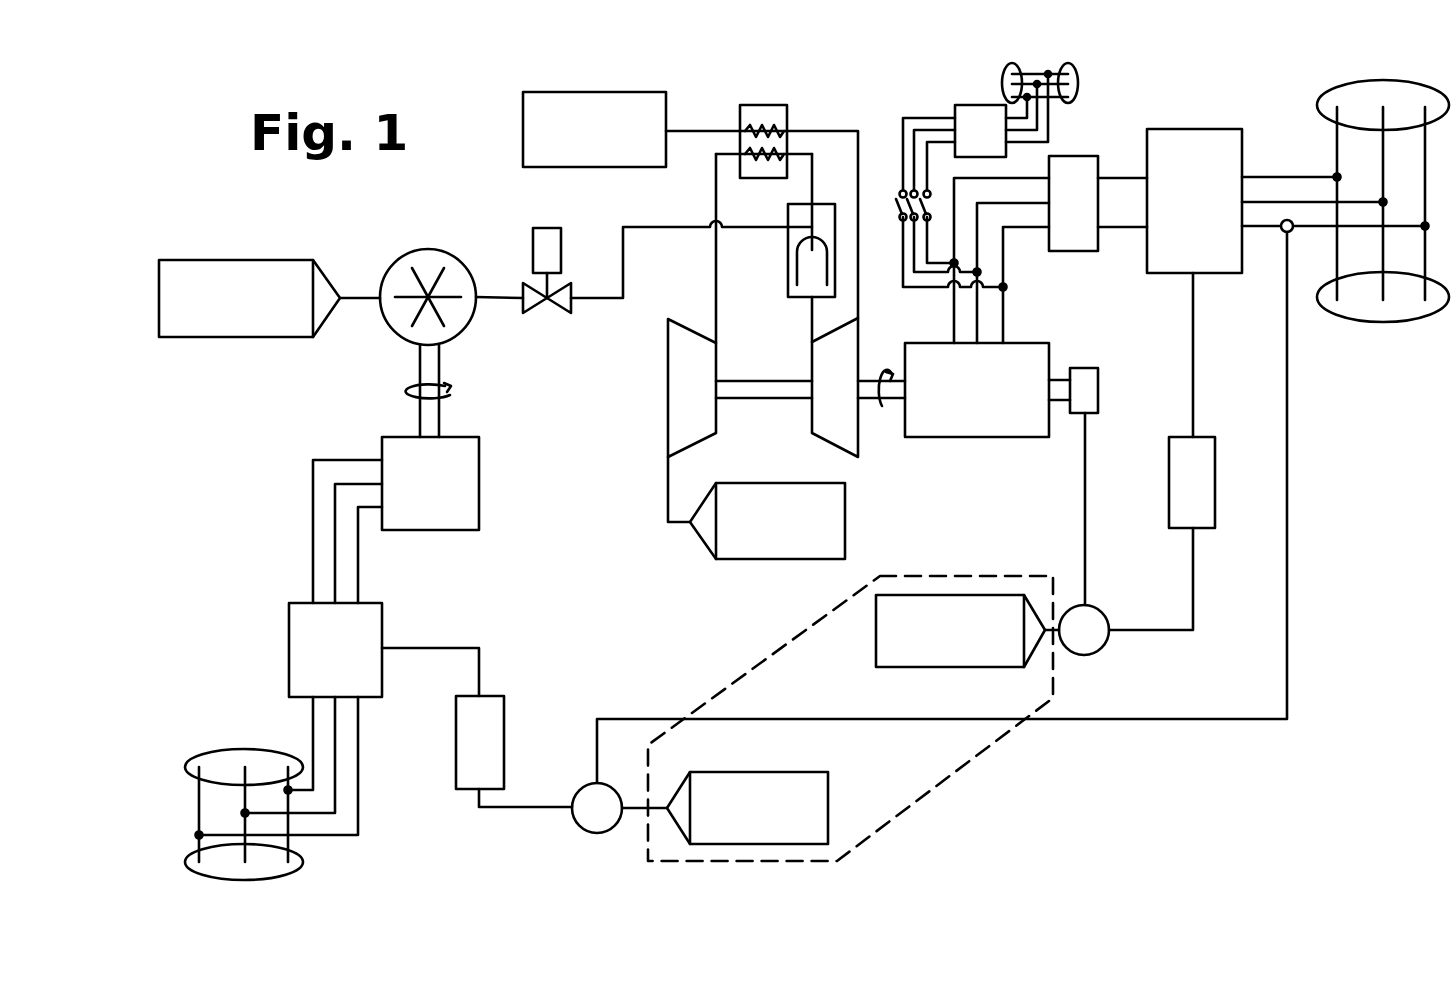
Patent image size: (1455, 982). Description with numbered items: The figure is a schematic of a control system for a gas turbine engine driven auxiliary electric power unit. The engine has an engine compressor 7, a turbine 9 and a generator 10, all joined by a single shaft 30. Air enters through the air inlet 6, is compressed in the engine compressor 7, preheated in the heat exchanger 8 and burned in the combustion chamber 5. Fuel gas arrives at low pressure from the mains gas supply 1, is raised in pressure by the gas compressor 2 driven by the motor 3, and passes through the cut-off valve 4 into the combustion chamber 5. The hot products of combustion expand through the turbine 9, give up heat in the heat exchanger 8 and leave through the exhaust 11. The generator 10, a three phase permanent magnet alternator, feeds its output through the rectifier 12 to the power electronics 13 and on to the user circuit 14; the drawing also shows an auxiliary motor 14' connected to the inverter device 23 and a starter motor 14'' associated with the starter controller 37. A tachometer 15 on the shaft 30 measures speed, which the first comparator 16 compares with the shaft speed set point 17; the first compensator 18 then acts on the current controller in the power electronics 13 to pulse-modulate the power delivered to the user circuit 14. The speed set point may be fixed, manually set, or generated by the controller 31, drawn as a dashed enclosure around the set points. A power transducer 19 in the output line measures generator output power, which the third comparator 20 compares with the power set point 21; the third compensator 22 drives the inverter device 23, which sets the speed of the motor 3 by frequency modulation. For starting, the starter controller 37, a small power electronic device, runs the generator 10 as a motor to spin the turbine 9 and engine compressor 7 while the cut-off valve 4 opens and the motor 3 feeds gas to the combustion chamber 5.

The mains gas supply 1 is at (262, 258).
The gas compressor 2 is at (423, 250).
The motor 3 is at (420, 503).
The cut-off valve 4 is at (561, 240).
The combustion chamber 5 is at (787, 265).
The air inlet 6 is at (752, 560).
The engine compressor 7 is at (668, 400).
The heat exchanger 8 is at (775, 105).
The turbine 9 is at (835, 455).
The generator 10 is at (960, 409).
The exhaust 11 is at (658, 92).
The rectifier 12 is at (1090, 221).
The power electronics 13 is at (1212, 225).
The user circuit 14 is at (1383, 237).
The auxiliary motor 14' is at (284, 825).
The starter motor 14'' is at (1086, 88).
The tachometer 15 is at (1085, 368).
The first comparator 16 is at (1103, 648).
The shaft speed set point 17 is at (930, 667).
The first compensator 18 is at (1209, 493).
The power transducer 19 is at (1282, 232).
The third comparator 20 is at (578, 830).
The power set point 21 is at (790, 772).
The third compensator 22 is at (463, 755).
The inverter device 23 is at (318, 665).
The shaft 30 is at (773, 400).
The controller 31 is at (935, 787).
The starter controller 37 is at (996, 149).